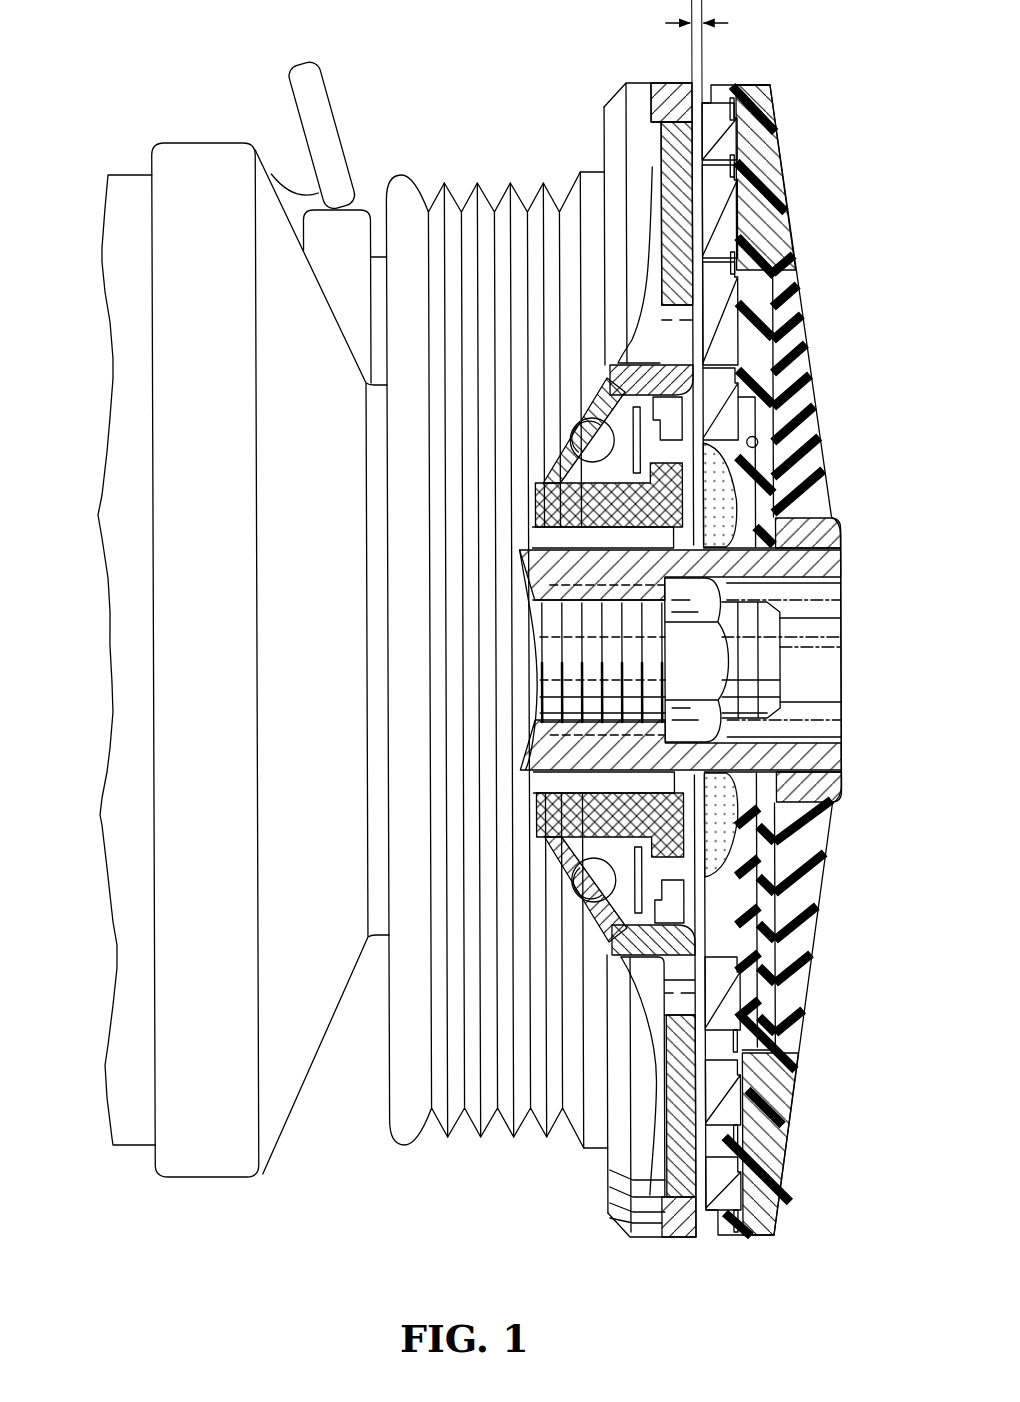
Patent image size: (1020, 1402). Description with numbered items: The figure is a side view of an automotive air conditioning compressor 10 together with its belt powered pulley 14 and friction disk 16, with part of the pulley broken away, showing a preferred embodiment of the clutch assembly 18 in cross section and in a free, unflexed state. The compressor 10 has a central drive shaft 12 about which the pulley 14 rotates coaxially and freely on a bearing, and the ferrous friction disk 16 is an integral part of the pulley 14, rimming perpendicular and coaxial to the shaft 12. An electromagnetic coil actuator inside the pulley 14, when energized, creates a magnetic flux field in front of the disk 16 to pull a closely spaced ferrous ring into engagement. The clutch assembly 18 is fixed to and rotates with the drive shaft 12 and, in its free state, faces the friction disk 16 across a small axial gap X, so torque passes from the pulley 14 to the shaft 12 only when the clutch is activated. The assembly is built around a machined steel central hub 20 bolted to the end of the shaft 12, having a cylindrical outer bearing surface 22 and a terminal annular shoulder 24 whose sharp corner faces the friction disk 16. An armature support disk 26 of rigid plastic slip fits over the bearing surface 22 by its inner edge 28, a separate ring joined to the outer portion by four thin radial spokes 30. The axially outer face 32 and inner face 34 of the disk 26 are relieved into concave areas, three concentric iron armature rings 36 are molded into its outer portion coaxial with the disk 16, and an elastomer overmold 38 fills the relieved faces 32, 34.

The compressor 10 is at (150, 160).
The drive shaft 12 is at (757, 648).
The pulley 14 is at (488, 195).
The friction disk 16 is at (678, 150).
The clutch assembly 18 is at (789, 140).
The central hub 20 is at (849, 530).
The outer bearing surface 22 is at (673, 543).
The terminal annular shoulder 24 is at (801, 524).
The armature support disk 26 is at (774, 82).
The inner edge 28 is at (765, 548).
The radial spokes 30 is at (769, 492).
The axially outer face 32 is at (736, 320).
The inner face 34 is at (759, 443).
The armature rings 36 is at (731, 298).
The overmold 38 is at (808, 965).